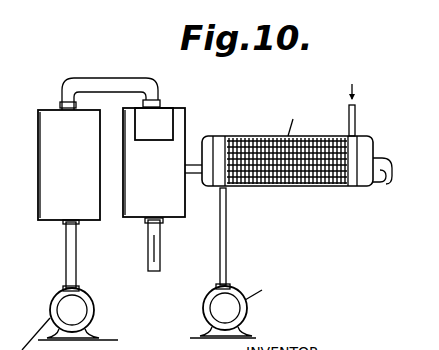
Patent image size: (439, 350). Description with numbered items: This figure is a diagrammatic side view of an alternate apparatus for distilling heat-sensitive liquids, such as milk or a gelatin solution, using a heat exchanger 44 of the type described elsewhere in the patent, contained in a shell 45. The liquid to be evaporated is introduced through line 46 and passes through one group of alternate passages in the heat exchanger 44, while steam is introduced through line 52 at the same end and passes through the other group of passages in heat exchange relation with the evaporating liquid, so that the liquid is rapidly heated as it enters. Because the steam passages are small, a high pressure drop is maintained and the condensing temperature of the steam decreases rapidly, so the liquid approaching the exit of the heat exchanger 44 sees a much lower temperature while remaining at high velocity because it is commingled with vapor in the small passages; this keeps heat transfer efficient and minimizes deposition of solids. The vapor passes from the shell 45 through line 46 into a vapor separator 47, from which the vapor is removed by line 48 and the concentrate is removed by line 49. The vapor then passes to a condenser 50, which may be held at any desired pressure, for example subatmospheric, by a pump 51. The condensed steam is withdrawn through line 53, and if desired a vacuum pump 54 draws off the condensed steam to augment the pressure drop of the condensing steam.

The heat exchanger 44 is at (262, 189).
The shell 45 is at (366, 190).
The line 46 is at (196, 154).
The vapor separator 47 is at (184, 107).
The line 48 is at (118, 78).
The line 49 is at (160, 249).
The condenser 50 is at (41, 199).
The pump 51 is at (95, 331).
The line 52 is at (355, 112).
The line 53 is at (228, 255).
The vacuum pump 54 is at (247, 317).